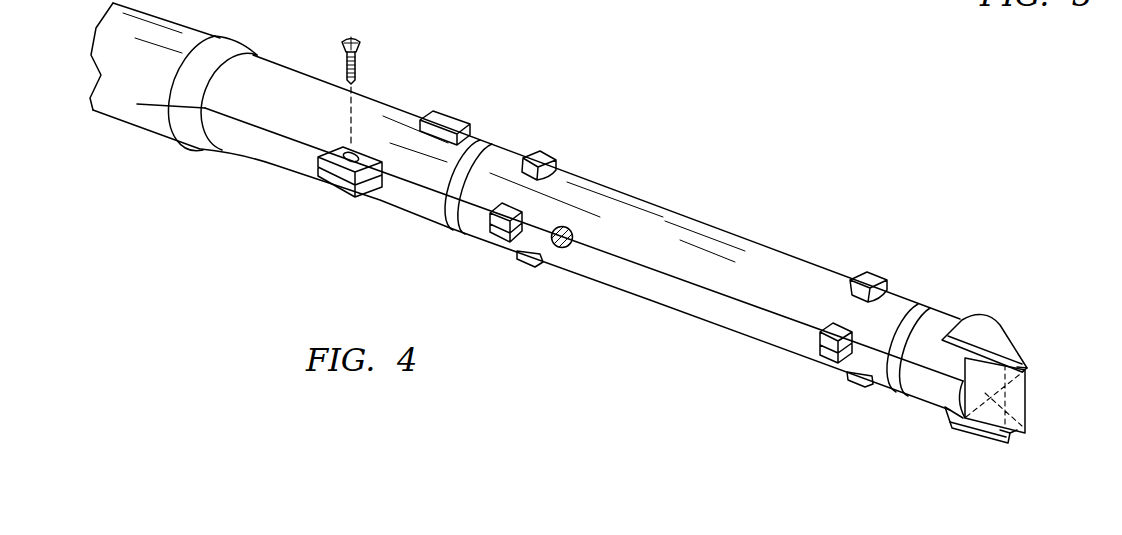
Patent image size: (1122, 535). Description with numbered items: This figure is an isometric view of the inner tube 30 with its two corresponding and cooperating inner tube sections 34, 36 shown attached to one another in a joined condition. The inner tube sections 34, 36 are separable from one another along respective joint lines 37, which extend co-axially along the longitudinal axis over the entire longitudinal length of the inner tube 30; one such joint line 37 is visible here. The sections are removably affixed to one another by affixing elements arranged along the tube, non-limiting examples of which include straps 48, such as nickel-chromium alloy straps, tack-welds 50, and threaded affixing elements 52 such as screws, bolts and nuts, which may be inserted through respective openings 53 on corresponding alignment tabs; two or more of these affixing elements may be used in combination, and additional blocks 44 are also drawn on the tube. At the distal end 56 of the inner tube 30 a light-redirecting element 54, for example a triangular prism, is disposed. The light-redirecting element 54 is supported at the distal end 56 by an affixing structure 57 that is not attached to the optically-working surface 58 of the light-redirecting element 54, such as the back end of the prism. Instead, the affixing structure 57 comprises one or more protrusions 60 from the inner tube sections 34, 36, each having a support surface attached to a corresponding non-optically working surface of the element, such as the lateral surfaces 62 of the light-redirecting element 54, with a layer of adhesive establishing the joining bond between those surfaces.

The inner tube 30 is at (594, 237).
The inner tube section 34 is at (760, 243).
The inner tube section 36 is at (678, 312).
The joint line 37 is at (140, 103).
The mounting block 44 is at (542, 152).
The strap 48 is at (447, 217).
The tack-weld 50 is at (563, 249).
The threaded affixing element 52 is at (358, 38).
The opening 53 is at (327, 173).
The light-redirecting element 54 is at (1013, 382).
The distal end 56 is at (994, 371).
The affixing structure 57 is at (983, 366).
The optically-working surface 58 is at (1012, 403).
The protrusion 60 is at (987, 320).
The lateral surface 62 is at (1018, 367).